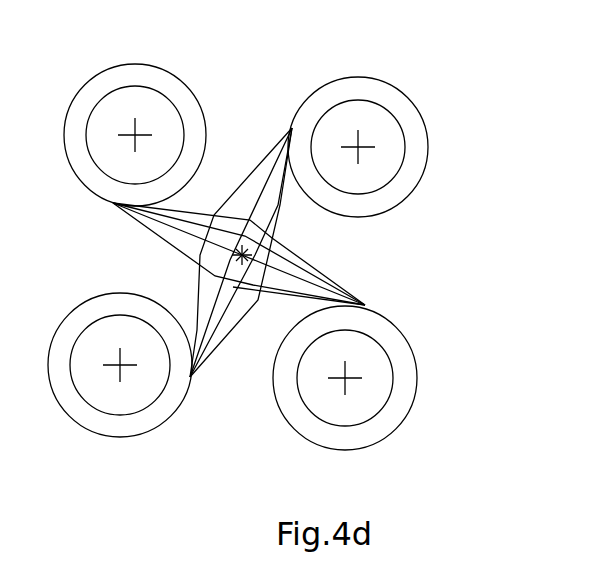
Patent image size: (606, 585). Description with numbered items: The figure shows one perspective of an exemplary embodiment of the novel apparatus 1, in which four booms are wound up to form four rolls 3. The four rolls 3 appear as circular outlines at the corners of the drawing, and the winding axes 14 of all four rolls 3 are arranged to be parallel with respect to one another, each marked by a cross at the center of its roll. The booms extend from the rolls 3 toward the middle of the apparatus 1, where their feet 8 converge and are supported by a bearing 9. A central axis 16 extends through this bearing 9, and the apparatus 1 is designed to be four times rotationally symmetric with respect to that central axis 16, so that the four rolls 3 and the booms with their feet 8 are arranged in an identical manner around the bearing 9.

The apparatus 1 is at (208, 74).
The rolls 3 is at (73, 118).
The winding axes 14 is at (358, 147).
The feet 8 is at (262, 222).
The bearing 9 is at (244, 254).
The central axis 16 is at (238, 254).